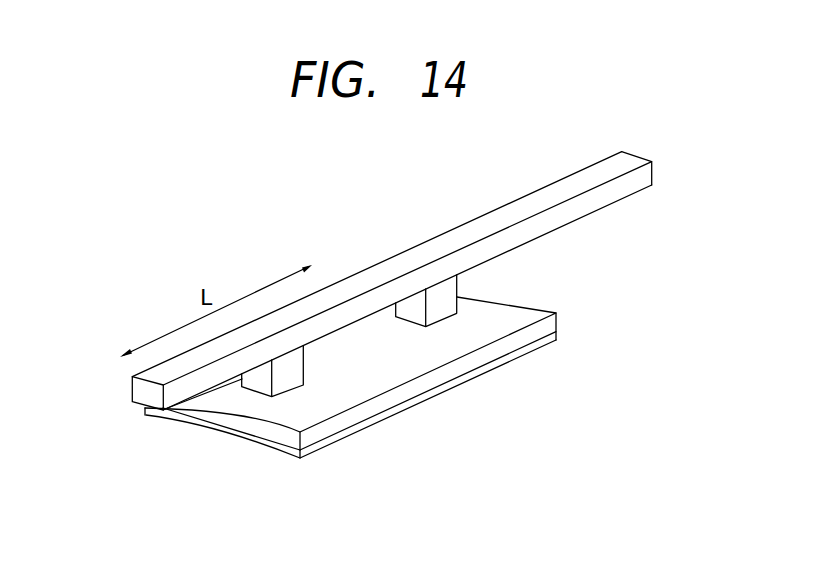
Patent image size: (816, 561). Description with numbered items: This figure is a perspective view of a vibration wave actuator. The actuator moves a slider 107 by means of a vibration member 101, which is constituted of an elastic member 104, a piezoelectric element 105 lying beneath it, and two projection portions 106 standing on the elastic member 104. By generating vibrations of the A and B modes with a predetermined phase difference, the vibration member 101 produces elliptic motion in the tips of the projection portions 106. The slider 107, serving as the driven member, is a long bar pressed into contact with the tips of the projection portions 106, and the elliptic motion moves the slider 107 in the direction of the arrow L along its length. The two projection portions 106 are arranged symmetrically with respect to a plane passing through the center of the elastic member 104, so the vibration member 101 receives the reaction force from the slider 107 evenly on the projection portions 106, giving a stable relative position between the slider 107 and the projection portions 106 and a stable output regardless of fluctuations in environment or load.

The vibration member 101 is at (379, 389).
The elastic member 104 is at (523, 312).
The piezoelectric element 105 is at (470, 374).
The projection portions 106 is at (255, 386).
The slider 107 is at (512, 202).